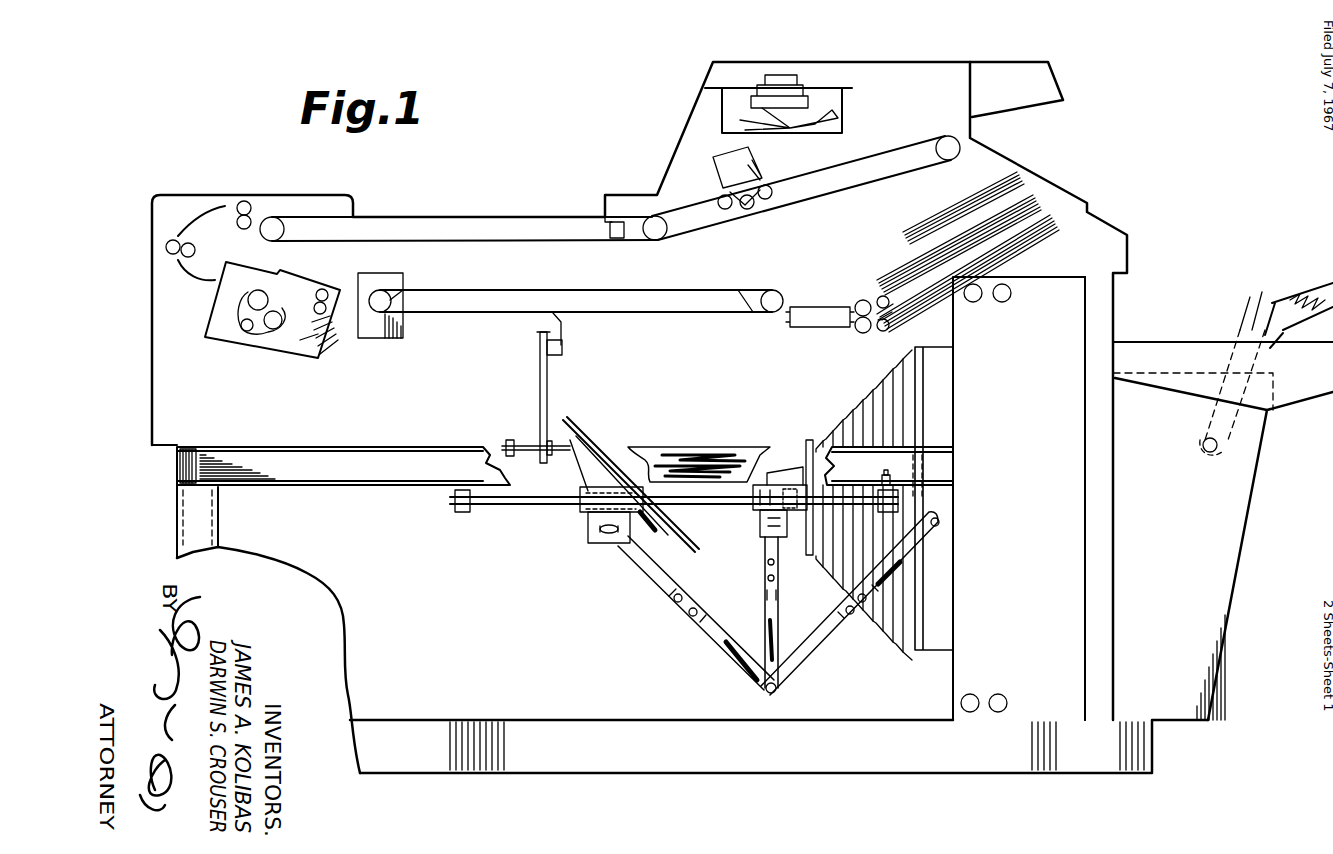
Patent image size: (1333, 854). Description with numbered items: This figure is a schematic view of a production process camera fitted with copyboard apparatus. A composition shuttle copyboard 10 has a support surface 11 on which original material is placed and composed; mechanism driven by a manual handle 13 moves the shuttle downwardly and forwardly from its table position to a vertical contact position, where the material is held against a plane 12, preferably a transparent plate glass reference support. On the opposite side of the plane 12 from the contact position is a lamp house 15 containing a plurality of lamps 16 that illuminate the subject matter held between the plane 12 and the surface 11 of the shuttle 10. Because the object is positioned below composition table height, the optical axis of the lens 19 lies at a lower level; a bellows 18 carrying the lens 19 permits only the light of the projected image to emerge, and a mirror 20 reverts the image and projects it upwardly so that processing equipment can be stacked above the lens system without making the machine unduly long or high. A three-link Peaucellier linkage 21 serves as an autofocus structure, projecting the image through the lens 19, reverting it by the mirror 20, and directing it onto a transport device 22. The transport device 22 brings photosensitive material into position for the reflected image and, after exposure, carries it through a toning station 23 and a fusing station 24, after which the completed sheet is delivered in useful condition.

The copyboard 10 is at (1284, 460).
The support surface 11 is at (1233, 368).
The plane 12 is at (1115, 508).
The manual handle 13 is at (1290, 300).
The lamp house 15 is at (1019, 407).
The lamps 16 is at (1003, 302).
The bellows 18 is at (869, 408).
The lens 19 is at (757, 485).
The mirror 20 is at (592, 450).
The three-link Peaucellier linkage 21 is at (706, 660).
The transport device 22 is at (473, 314).
The toning station 23 is at (276, 346).
The fusing station 24 is at (738, 222).